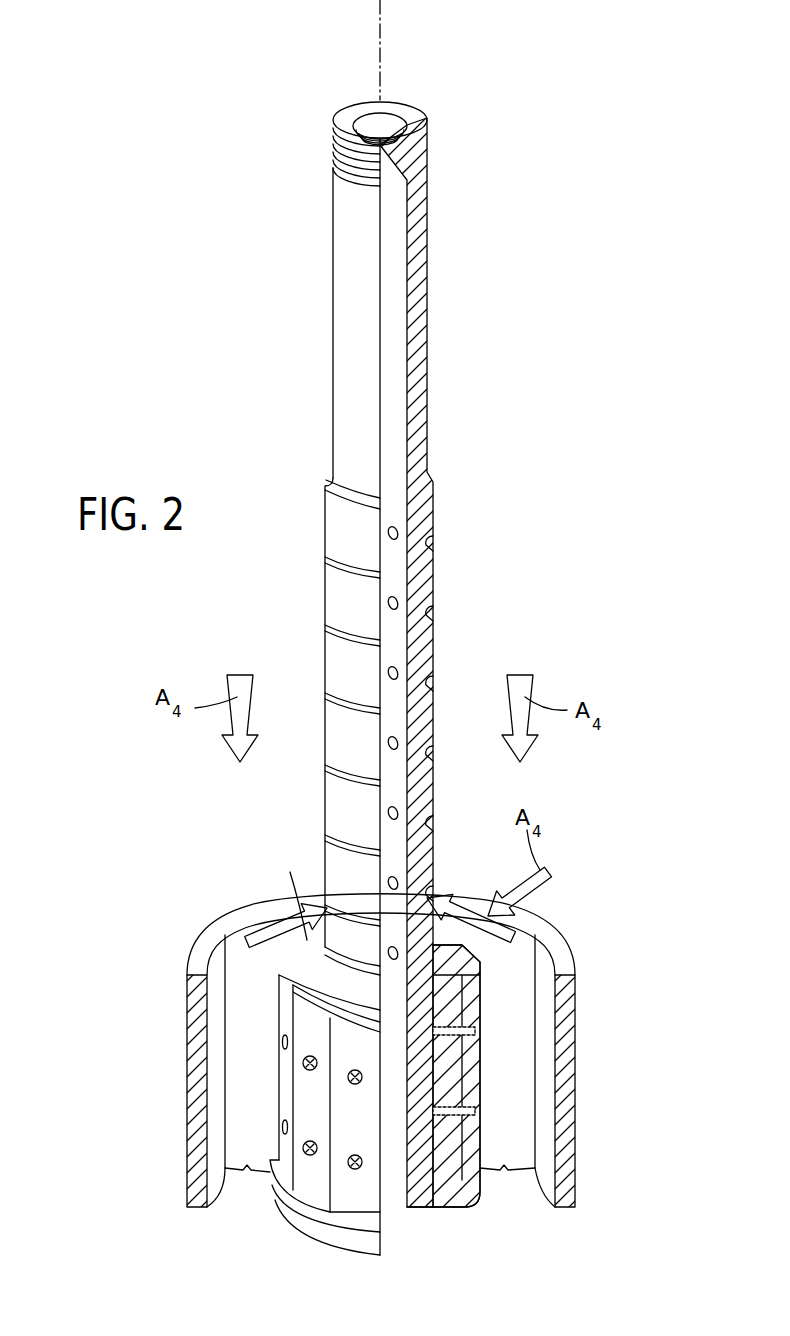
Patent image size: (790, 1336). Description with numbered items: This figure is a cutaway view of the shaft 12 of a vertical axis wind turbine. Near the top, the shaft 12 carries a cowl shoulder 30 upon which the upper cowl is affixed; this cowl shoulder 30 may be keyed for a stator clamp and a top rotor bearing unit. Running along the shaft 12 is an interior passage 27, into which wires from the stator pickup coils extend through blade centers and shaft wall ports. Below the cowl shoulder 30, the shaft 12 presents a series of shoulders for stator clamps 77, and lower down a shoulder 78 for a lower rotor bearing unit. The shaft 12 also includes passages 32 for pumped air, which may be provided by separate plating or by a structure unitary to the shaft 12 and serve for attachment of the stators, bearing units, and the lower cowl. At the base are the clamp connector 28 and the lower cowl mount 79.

The shaft 12 is at (457, 418).
The interior passage 27 is at (392, 310).
The clamp connector 28 is at (262, 1246).
The cowl shoulder 30 is at (330, 478).
The passages 32 is at (563, 900).
The shoulders for stator clamps 77 is at (326, 695).
The shoulder 78 is at (305, 940).
The lower cowl mount 79 is at (181, 1083).